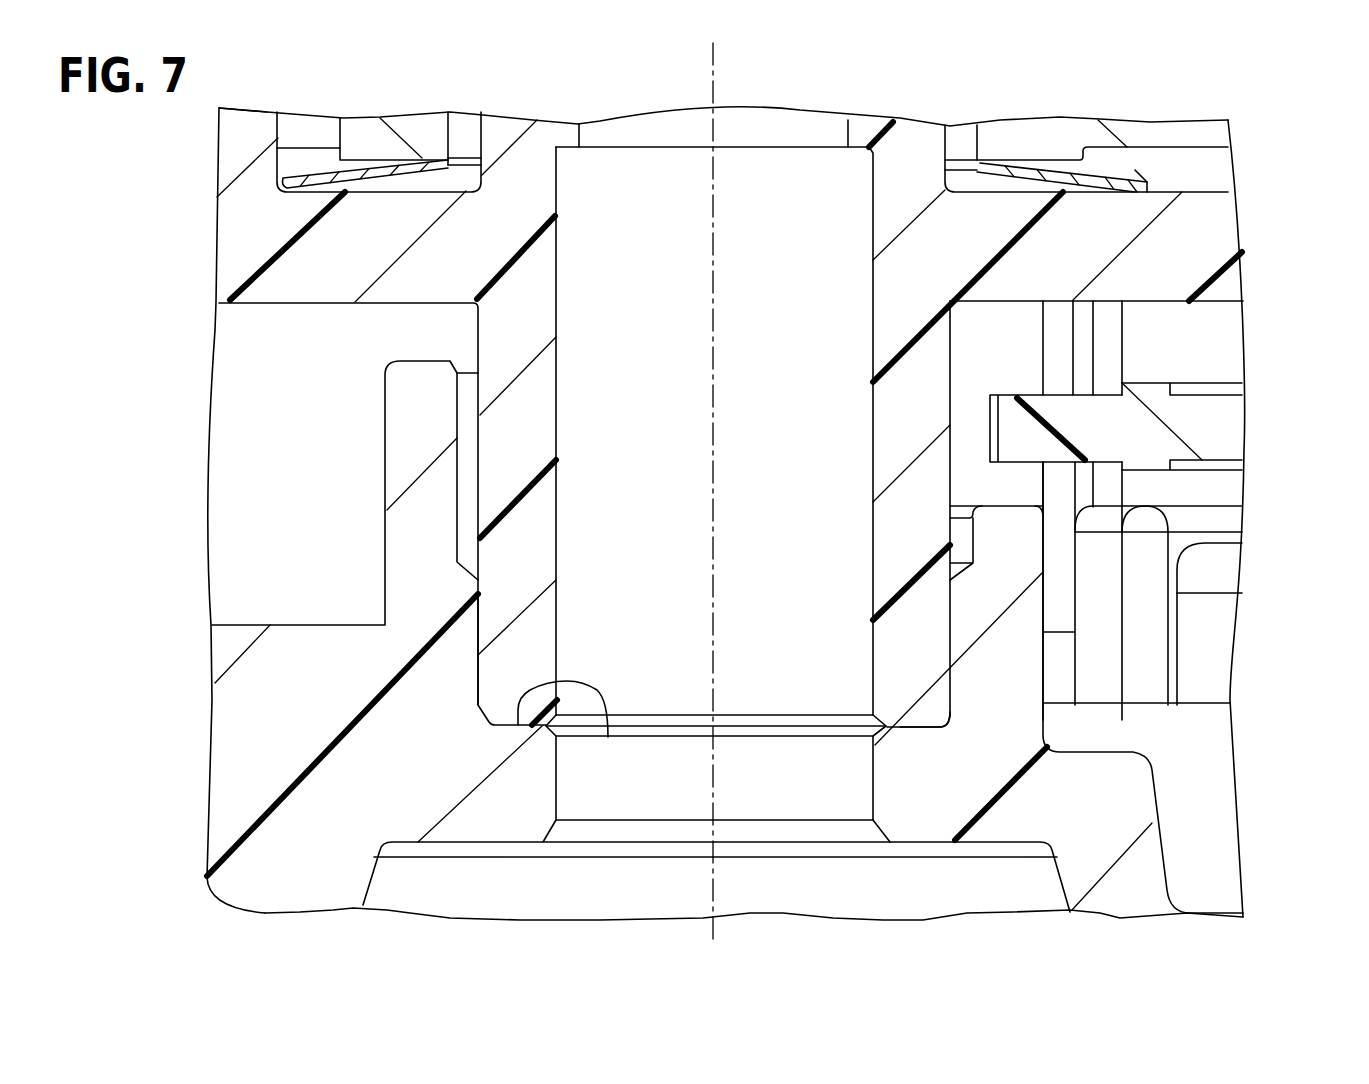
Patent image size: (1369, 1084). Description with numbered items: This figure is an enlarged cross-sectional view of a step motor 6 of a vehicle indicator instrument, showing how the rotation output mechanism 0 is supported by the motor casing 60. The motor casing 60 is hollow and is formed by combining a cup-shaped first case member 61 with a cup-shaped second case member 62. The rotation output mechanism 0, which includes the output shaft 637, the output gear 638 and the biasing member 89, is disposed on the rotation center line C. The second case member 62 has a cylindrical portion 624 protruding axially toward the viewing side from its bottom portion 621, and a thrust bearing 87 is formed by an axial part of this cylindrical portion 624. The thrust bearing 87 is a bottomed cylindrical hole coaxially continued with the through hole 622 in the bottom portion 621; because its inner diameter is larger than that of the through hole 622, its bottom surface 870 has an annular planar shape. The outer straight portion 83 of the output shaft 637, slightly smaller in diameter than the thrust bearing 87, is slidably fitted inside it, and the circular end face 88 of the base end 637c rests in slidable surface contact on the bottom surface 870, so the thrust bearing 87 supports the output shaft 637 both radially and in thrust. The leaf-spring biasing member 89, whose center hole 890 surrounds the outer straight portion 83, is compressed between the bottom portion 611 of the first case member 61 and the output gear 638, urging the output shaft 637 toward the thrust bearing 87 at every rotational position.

The drive unit 6 is at (308, 108).
The motor casing 60 is at (778, 486).
The first case member 61 is at (418, 133).
The second case member 62 is at (1153, 787).
The bottom portion 611 is at (1017, 142).
The center hole 890 is at (965, 163).
The biasing member 89 is at (1045, 173).
The rotation output mechanism 0 is at (1135, 174).
The output gear 638 is at (1198, 247).
The output shaft 637 is at (478, 333).
The base end 637c is at (497, 683).
The outer straight portion 83 is at (950, 617).
The cylindrical portion 624 is at (1003, 630).
The thrust bearing 87 is at (945, 720).
The end face 88 is at (502, 727).
The bottom surface 870 is at (608, 737).
The through hole 622 is at (875, 780).
The bottom portion 621 is at (1053, 847).
The rotation center line C is at (716, 70).